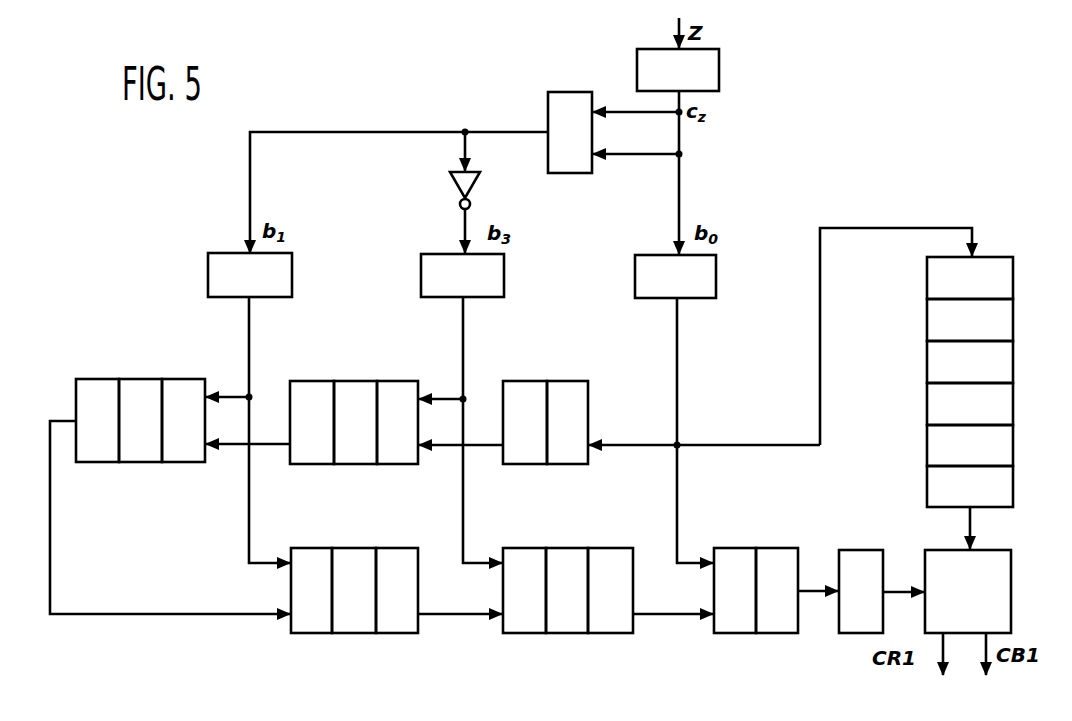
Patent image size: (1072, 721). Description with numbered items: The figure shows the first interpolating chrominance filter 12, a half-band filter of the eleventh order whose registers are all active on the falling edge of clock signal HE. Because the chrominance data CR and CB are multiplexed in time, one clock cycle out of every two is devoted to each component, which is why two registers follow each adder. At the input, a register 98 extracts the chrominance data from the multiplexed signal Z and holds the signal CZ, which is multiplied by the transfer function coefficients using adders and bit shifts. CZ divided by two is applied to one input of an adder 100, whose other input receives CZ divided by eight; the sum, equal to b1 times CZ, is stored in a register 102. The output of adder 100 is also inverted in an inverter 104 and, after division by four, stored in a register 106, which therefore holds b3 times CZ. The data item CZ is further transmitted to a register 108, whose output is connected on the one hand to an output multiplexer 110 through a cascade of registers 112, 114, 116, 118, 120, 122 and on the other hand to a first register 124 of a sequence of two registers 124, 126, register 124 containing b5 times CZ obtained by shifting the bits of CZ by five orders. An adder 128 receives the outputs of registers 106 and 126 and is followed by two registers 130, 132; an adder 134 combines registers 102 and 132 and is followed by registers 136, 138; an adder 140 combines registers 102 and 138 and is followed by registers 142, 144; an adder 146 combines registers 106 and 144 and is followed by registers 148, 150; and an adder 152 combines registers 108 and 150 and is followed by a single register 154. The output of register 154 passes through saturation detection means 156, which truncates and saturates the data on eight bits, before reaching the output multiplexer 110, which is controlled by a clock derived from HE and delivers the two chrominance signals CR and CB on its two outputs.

The first interpolating chrominance filter 12 is at (882, 97).
The register Z 98 is at (640, 73).
The adder 100 is at (548, 108).
The register 102 is at (212, 276).
The inverter 104 is at (456, 187).
The register 106 is at (425, 283).
The register 108 is at (640, 284).
The output multiplexer 110 is at (968, 591).
The register 112 is at (936, 284).
The register 114 is at (933, 328).
The register 116 is at (932, 371).
The register 118 is at (932, 412).
The register 120 is at (932, 454).
The register 122 is at (932, 493).
The first register 124 is at (575, 386).
The register 126 is at (530, 386).
The adder 128 is at (410, 388).
The register 130 is at (356, 388).
The register 132 is at (312, 388).
The adder 134 is at (186, 383).
The register 136 is at (142, 383).
The register 138 is at (98, 383).
The adder 140 is at (316, 552).
The register 142 is at (357, 552).
The register 144 is at (405, 552).
The adder 146 is at (535, 554).
The register 148 is at (573, 552).
The register 150 is at (620, 554).
The adder 152 is at (733, 552).
The register 154 is at (780, 552).
The saturation detection means 156 is at (861, 556).